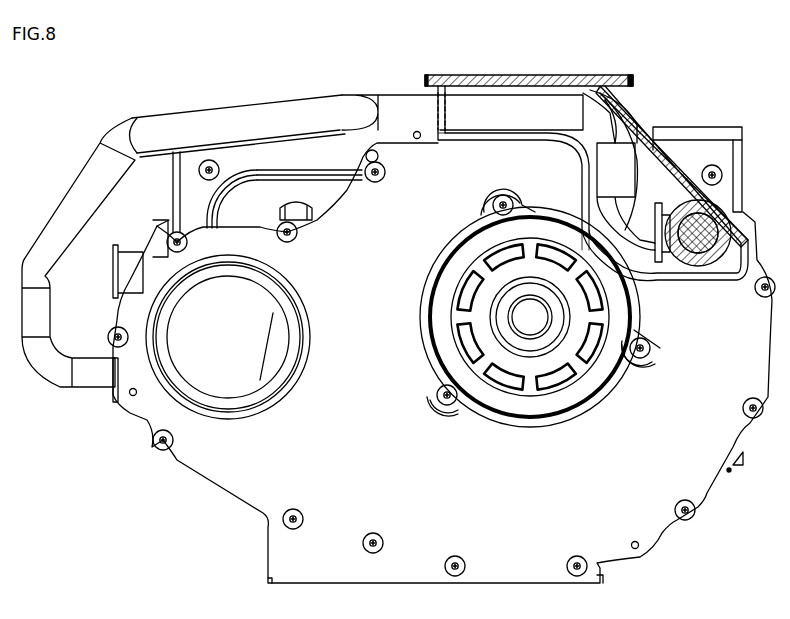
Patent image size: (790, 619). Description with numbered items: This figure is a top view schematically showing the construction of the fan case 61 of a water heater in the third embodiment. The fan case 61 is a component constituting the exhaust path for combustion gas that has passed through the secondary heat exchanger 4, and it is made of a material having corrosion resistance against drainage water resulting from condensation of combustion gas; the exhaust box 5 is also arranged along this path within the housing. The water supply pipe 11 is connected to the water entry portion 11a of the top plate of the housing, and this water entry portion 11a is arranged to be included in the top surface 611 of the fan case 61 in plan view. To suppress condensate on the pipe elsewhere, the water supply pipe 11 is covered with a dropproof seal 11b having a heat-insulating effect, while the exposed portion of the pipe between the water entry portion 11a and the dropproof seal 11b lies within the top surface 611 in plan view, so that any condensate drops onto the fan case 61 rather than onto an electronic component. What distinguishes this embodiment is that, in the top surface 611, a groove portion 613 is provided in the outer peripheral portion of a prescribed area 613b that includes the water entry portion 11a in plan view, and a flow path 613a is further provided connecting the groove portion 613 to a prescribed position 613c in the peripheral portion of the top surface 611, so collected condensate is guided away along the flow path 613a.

The secondary heat exchanger 4 is at (718, 133).
The exhaust box 5 is at (242, 213).
The water supply pipe 11 is at (47, 362).
The water entry portion 11a is at (723, 223).
The dropproof seal 11b is at (400, 108).
The fan case 61 is at (662, 533).
The top surface 611 is at (698, 443).
The groove portion 613 is at (490, 82).
The flow path 613a is at (620, 83).
The prescribed area 613b is at (647, 157).
The prescribed position 613c is at (637, 85).